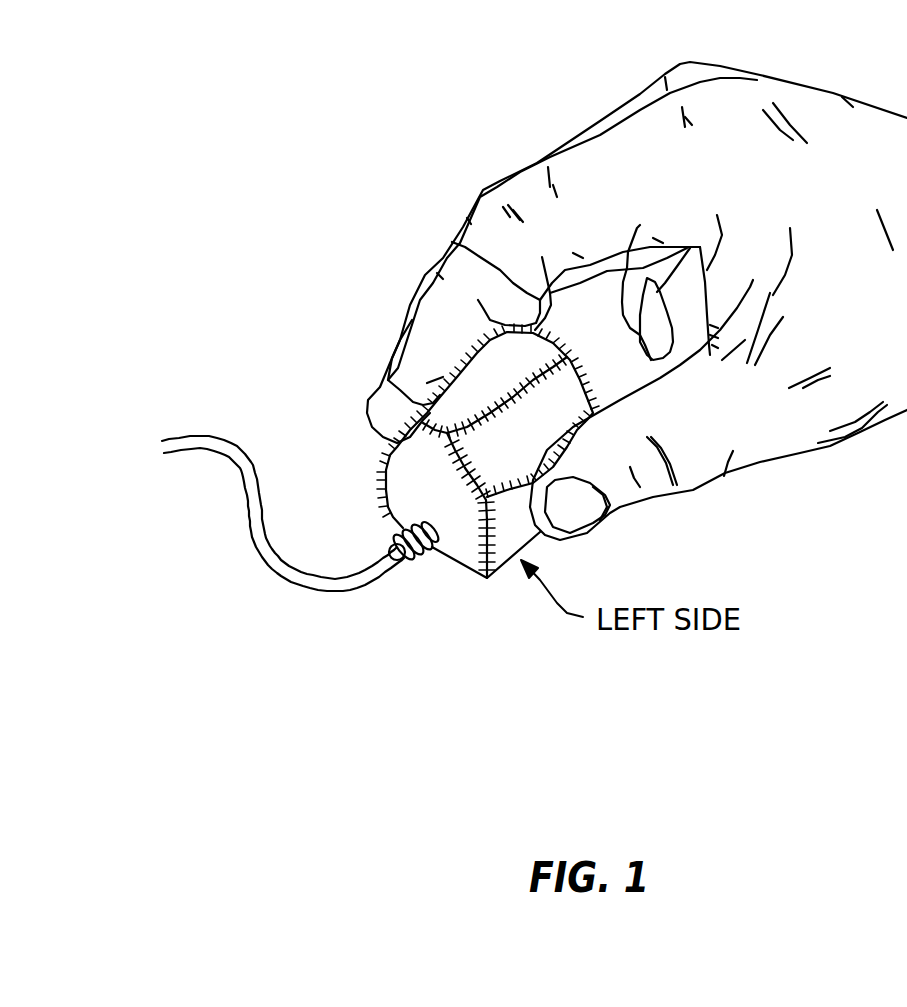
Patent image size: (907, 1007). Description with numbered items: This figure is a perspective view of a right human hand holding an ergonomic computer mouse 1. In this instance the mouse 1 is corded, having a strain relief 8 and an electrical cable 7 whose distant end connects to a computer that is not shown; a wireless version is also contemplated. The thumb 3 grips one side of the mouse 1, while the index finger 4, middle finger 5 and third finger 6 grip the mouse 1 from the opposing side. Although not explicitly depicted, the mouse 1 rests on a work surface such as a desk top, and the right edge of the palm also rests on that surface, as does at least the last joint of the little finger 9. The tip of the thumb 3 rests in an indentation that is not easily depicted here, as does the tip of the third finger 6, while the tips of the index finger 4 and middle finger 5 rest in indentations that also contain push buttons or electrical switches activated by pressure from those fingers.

The ergonomic computer mouse 1 is at (465, 451).
The thumb 3 is at (718, 427).
The index finger 4 is at (543, 246).
The middle finger 5 is at (380, 381).
The third finger 6 is at (663, 287).
The electrical cable 7 is at (283, 473).
The strain relief 8 is at (415, 587).
The little finger 9 is at (750, 237).